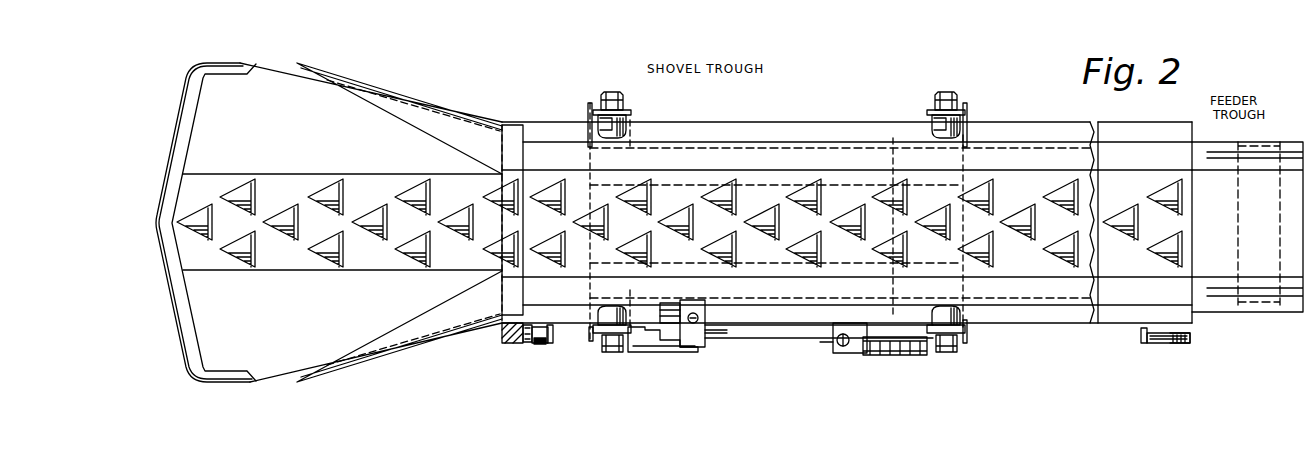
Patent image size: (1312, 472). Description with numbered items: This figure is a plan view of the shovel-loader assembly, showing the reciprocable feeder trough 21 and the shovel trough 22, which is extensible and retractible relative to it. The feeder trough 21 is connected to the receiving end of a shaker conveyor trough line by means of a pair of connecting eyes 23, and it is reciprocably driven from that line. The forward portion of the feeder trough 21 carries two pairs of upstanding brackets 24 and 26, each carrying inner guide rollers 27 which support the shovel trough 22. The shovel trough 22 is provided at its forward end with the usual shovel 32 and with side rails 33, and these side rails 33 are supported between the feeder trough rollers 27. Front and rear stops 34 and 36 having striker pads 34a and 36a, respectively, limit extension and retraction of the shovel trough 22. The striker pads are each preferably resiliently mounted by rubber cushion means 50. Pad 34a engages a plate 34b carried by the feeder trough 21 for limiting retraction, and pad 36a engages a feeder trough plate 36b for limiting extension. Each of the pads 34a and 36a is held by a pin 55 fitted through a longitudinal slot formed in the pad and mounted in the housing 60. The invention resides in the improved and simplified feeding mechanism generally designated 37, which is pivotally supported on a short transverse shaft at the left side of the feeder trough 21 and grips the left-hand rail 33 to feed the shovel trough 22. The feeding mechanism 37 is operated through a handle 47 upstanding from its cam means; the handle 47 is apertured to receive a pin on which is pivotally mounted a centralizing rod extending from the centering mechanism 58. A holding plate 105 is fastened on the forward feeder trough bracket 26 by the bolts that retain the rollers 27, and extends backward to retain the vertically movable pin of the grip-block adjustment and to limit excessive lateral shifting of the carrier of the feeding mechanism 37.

The feeder trough 21 is at (1227, 178).
The shovel trough 22 is at (687, 157).
The connecting eyes 23 is at (1270, 308).
The upstanding brackets 24 is at (625, 112).
The upstanding brackets 26 is at (621, 352).
The inner guide rollers 27 is at (627, 128).
The shovel 32 is at (348, 148).
The side rails 33 is at (855, 128).
The front stop 34 is at (502, 325).
The striker pad 34a is at (551, 344).
The plate 34b is at (591, 343).
The rear stop 36 is at (1177, 346).
The striker pad 36a is at (1142, 337).
The feeder trough plate 36b is at (968, 338).
The feeding mechanism 37 is at (708, 354).
The handle 47 is at (833, 343).
The rubber cushion means 50 is at (522, 347).
The pin 55 is at (538, 345).
The centering mechanism 58 is at (885, 356).
The housing 60 is at (529, 345).
The holding plate 105 is at (653, 351).